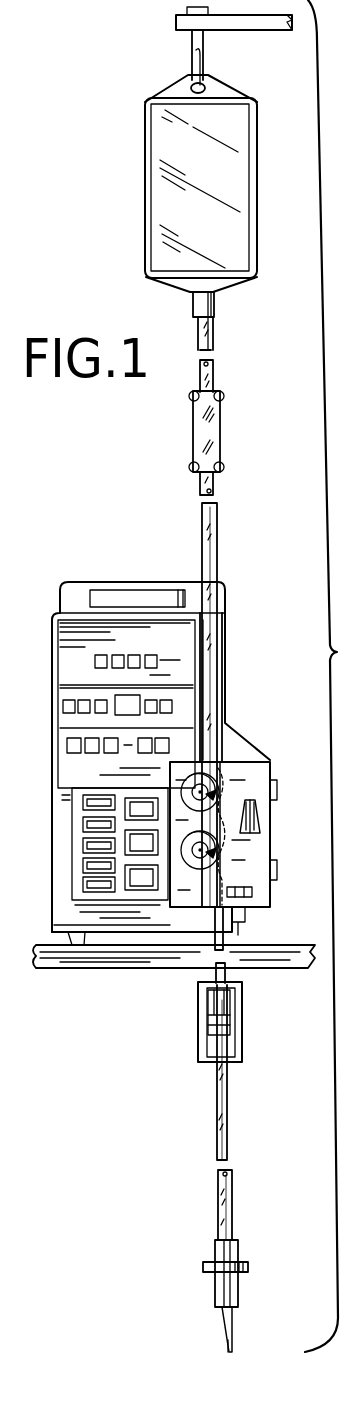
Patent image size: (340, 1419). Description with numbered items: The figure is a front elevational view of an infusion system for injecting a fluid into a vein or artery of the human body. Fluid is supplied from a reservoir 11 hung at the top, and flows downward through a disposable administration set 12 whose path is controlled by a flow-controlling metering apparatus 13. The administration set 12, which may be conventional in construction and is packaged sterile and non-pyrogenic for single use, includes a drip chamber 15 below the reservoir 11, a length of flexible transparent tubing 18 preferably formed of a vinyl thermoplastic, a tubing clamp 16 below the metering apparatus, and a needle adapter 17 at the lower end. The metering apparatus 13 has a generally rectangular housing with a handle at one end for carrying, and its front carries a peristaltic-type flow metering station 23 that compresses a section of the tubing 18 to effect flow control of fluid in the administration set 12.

The reservoir 11 is at (155, 203).
The disposable administration set 12 is at (218, 548).
The flow-controlling metering apparatus 13 is at (86, 582).
The drip chamber 15 is at (214, 435).
The tubing clamp 16 is at (238, 1042).
The needle adapter 17 is at (238, 1250).
The flexible transparent tubing 18 is at (212, 660).
The peristaltic-type flow metering station 23 is at (185, 883).